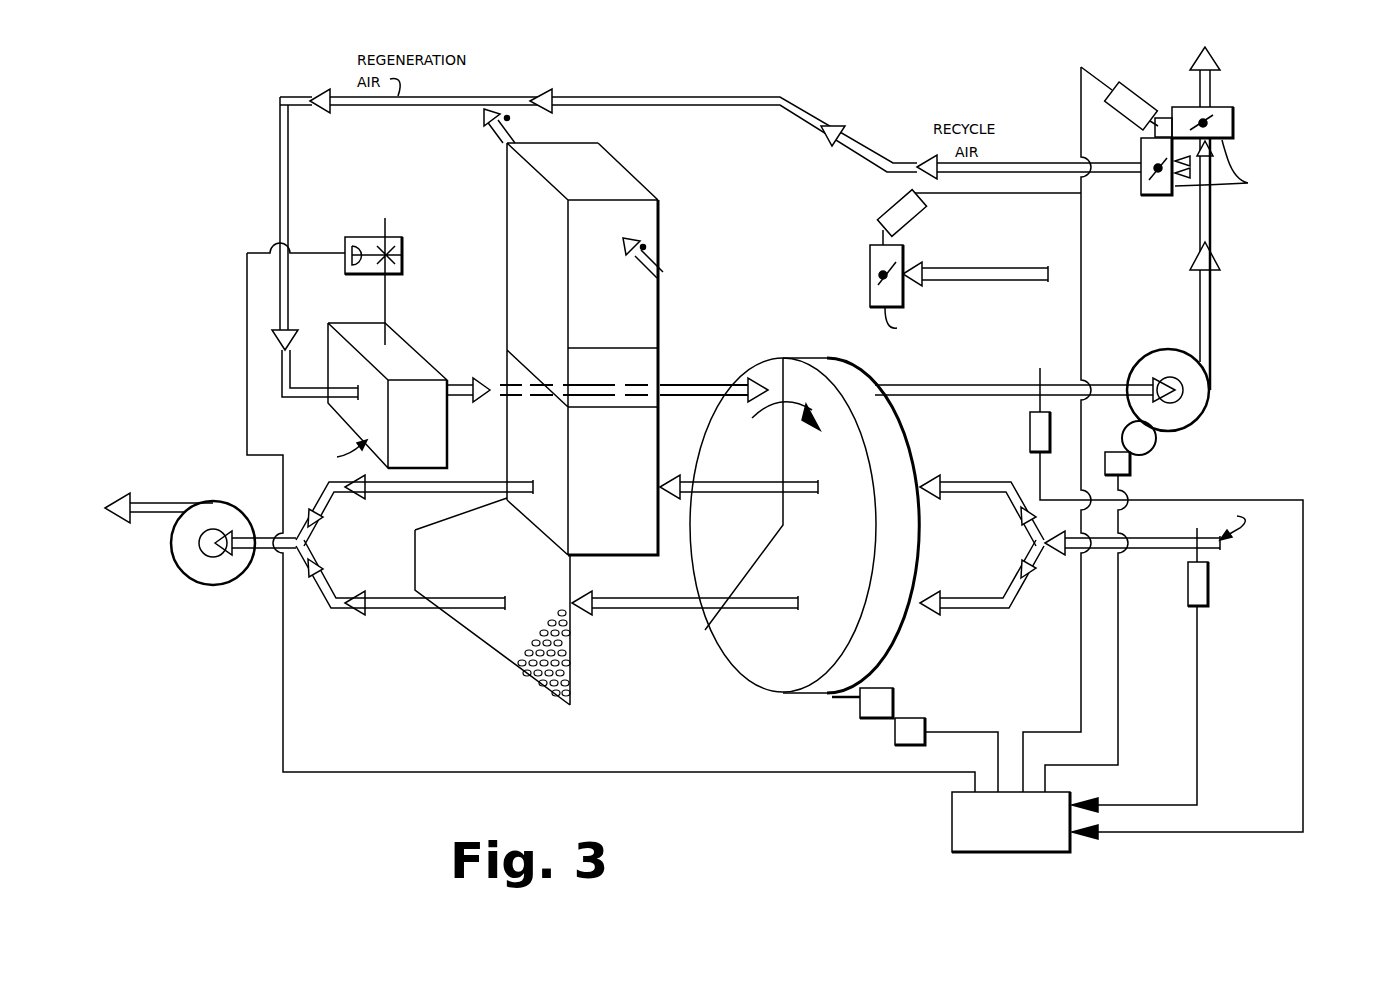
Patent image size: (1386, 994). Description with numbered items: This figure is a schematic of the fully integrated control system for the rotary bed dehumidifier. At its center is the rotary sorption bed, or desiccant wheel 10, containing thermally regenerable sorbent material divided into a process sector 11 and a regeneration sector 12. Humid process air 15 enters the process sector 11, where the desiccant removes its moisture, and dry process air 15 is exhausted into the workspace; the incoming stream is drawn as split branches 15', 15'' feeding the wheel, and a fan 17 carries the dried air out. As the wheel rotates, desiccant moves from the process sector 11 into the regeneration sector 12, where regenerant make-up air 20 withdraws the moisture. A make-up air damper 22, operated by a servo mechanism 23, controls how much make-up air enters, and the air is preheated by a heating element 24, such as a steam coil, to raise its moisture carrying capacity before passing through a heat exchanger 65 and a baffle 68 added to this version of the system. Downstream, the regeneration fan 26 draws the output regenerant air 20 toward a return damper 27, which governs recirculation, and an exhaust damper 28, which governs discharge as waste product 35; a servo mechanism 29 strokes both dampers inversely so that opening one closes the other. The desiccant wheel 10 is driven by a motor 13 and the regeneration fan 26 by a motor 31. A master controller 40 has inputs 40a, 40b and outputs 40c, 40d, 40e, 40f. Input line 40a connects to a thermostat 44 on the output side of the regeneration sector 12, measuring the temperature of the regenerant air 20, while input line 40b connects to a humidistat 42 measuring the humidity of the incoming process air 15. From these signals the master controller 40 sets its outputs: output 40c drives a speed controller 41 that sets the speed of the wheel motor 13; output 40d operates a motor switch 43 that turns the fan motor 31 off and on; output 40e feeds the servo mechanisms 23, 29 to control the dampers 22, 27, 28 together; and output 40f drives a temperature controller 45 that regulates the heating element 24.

The rotary sorption bed 10 is at (767, 683).
The process sector 11 is at (791, 650).
The regeneration sector 12 is at (751, 461).
The motor 13 is at (893, 688).
The process air 15 is at (746, 566).
The upper process air branch 15' is at (982, 500).
The lower process air branch 15'' is at (982, 577).
The process air fan 17 is at (188, 580).
The regenerant air 20 is at (1000, 281).
The make-up air damper 22 is at (870, 250).
The servo mechanism 23 is at (927, 208).
The heating element 24 is at (408, 347).
The regeneration fan 26 is at (1200, 382).
The return damper 27 is at (1165, 197).
The exhaust damper 28 is at (1236, 123).
The servo mechanism 29 is at (1126, 88).
The motor 31 is at (1155, 450).
The waste product 35 is at (1213, 78).
The master controller 40 is at (1008, 853).
The input line 40a is at (1192, 832).
The input line 40b is at (1128, 805).
The output line 40c is at (948, 732).
The output line 40d is at (1140, 717).
The output line 40e is at (1037, 730).
The output line 40f is at (820, 772).
The speed controller 41 is at (920, 718).
The humidistat 42 is at (1208, 578).
The motor switch 43 is at (1124, 476).
The thermostat 44 is at (1030, 422).
The temperature controller 45 is at (404, 250).
The heat exchanger 65 is at (626, 166).
The baffle 68 is at (488, 620).